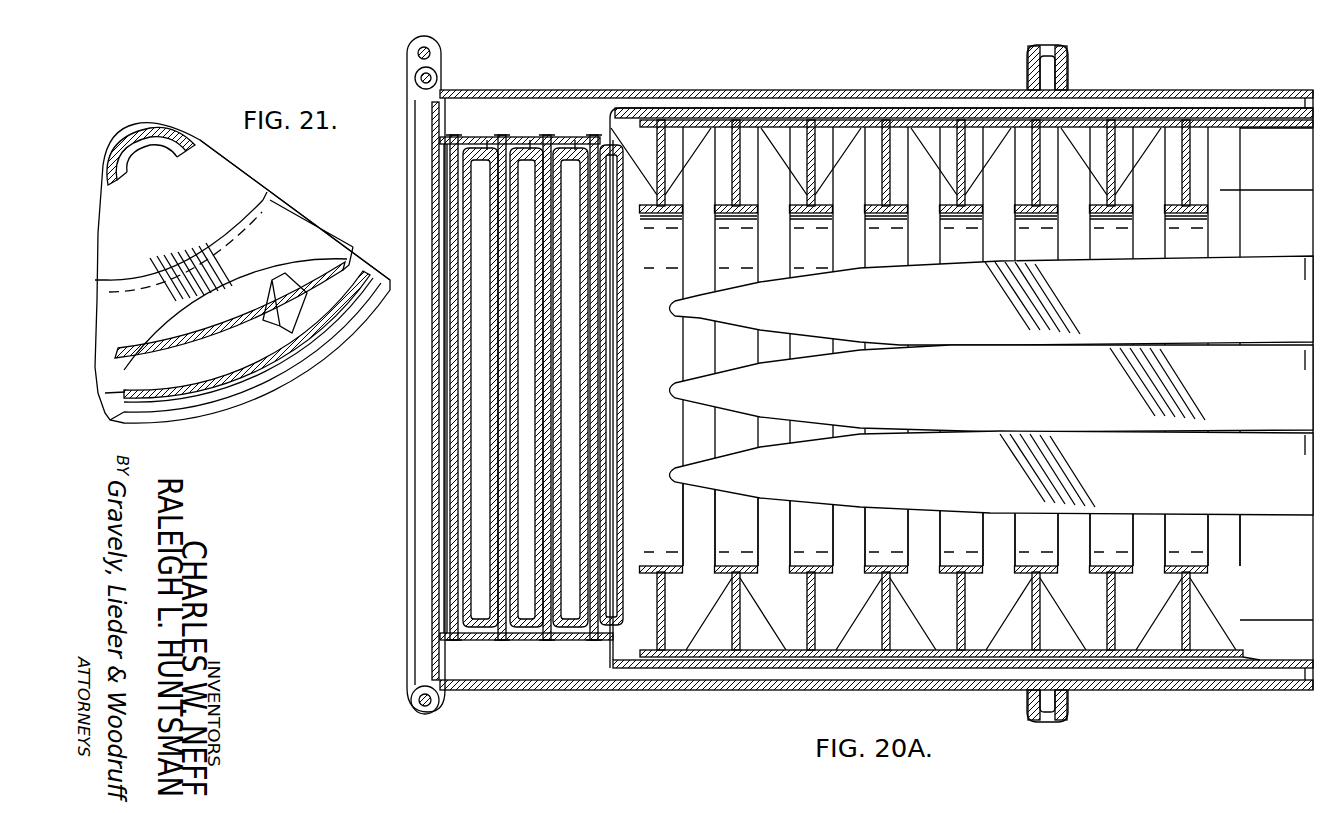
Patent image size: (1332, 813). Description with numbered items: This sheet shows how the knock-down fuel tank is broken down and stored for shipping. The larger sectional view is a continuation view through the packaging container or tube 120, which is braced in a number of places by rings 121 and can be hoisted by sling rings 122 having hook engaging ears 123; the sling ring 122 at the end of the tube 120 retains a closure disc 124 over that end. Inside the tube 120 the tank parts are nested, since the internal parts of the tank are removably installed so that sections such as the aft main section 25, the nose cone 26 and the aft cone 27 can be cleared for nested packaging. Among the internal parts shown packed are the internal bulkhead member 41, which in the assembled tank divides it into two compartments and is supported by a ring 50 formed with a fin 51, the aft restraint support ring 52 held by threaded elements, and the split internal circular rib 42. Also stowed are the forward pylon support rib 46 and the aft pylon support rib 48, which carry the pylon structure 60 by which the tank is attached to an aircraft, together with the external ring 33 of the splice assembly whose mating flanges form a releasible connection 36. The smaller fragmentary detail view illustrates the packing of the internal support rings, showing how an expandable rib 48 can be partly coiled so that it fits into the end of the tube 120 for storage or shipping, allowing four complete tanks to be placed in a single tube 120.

In FIG. 20A, the aft main section 25 is at (1258, 120).
In FIG. 21, the nose cone 26 is at (141, 148).
In FIG. 21, the aft cone 27 is at (158, 173).
In FIG. 21, the external ring 33 is at (243, 307).
In FIG. 21, the releasible connection 36 is at (280, 333).
In FIG. 20A, the internal bulkhead member 41 is at (524, 488).
In FIG. 21, the internal circular split rib 42 is at (247, 227).
In FIG. 20A, the forward pylon support rib 46 is at (868, 510).
In FIG. 20A, the aft pylon support rib 48 is at (1012, 522).
In FIG. 20A, the ring 50 is at (578, 142).
In FIG. 20A, the fin 51 is at (504, 142).
In FIG. 20A, the aft restraint support ring 52 is at (484, 142).
In FIG. 20A, the pylon structure 60 is at (972, 312).
In FIG. 21, the packaging container or tube 120 is at (226, 392).
In FIG. 20A, the packaging container or tube 120 is at (1235, 686).
In FIG. 20A, the rings 121 is at (1045, 723).
In FIG. 21, the sling rings 122 is at (253, 387).
In FIG. 20A, the sling rings 122 is at (430, 714).
In FIG. 20A, the hook engaging ears 123 is at (436, 40).
In FIG. 21, the closure discs 124 is at (270, 190).
In FIG. 20A, the closure discs 124 is at (432, 410).